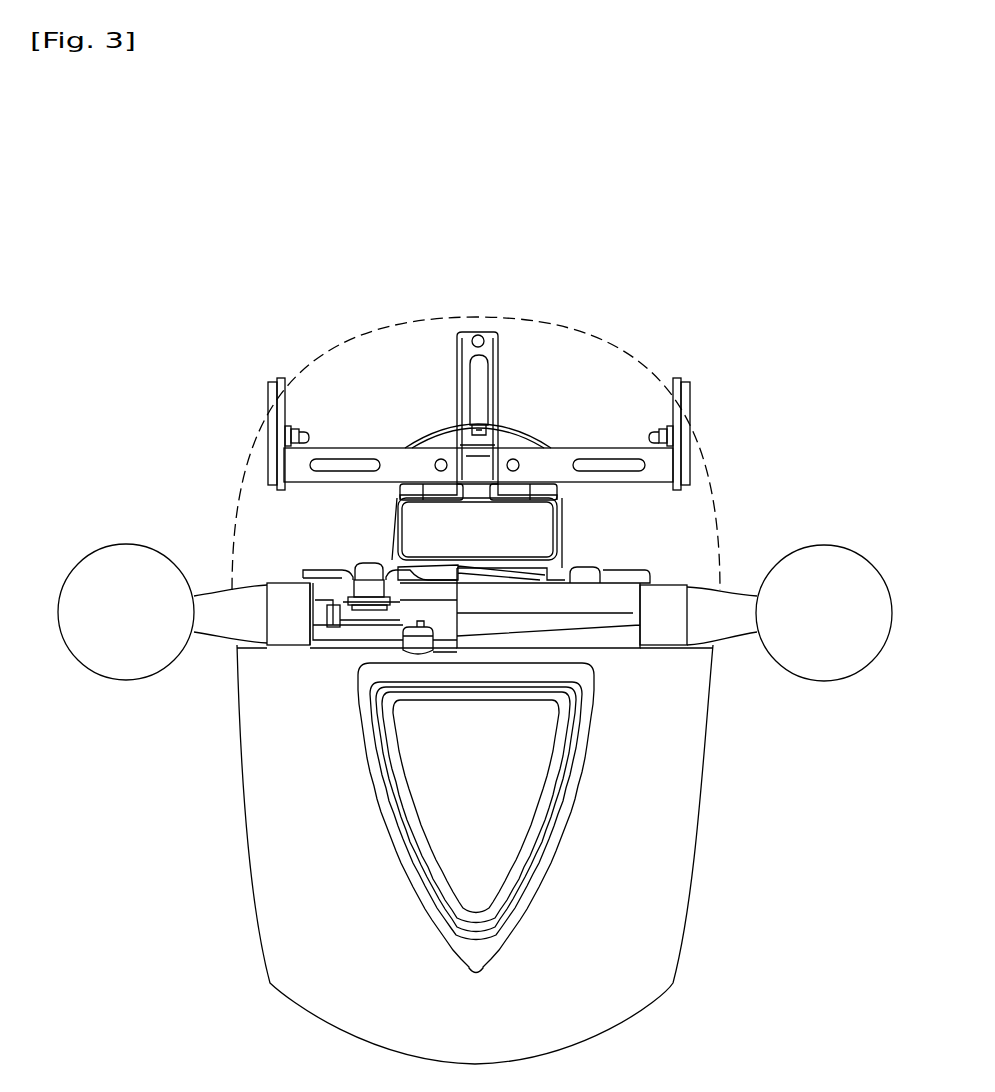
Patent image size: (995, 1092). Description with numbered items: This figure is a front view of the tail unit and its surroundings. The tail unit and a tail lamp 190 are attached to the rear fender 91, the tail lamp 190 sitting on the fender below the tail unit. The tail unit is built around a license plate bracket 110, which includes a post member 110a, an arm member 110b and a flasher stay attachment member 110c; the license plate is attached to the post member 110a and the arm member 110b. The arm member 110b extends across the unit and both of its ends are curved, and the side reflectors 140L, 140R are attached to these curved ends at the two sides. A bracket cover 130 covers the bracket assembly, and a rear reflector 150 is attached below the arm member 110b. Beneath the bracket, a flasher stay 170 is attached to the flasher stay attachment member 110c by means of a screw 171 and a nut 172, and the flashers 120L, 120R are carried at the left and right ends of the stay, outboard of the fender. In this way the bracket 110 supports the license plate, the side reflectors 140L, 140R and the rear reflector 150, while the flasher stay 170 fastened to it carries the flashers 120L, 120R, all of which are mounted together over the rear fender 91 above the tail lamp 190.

The rear fender 91 is at (680, 822).
The license plate bracket 110 is at (472, 416).
The post member 110a is at (488, 392).
The arm member 110b is at (367, 452).
The flasher stay attachment member 110c is at (410, 645).
The flasher 120L is at (138, 540).
The flasher 120R is at (838, 542).
The bracket cover 130 is at (432, 447).
The side reflector 140L is at (270, 388).
The side reflector 140R is at (688, 388).
The rear reflector 150 is at (536, 522).
The flasher stay 170 is at (596, 636).
The screw 171 is at (430, 654).
The nut 172 is at (400, 634).
The tail lamp 190 is at (540, 754).